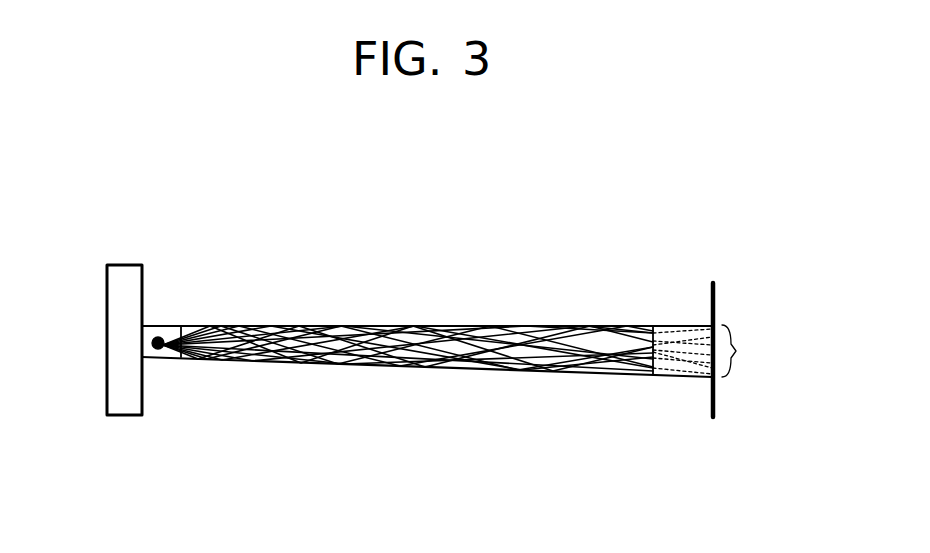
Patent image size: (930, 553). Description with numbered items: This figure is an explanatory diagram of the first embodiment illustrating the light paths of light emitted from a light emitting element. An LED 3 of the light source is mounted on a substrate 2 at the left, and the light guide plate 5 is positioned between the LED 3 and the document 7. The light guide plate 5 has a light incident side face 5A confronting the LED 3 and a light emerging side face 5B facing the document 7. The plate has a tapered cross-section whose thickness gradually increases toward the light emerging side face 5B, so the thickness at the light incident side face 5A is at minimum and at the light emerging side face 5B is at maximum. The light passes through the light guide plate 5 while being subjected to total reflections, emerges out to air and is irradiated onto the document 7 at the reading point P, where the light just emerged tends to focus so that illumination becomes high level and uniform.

The substrate 2 is at (120, 407).
The LED 3 is at (158, 352).
The light guide plate 5 is at (416, 382).
The light incident side face 5A is at (169, 341).
The light emerging side face 5B is at (665, 330).
The document 7 is at (716, 303).
The reading point P is at (739, 351).